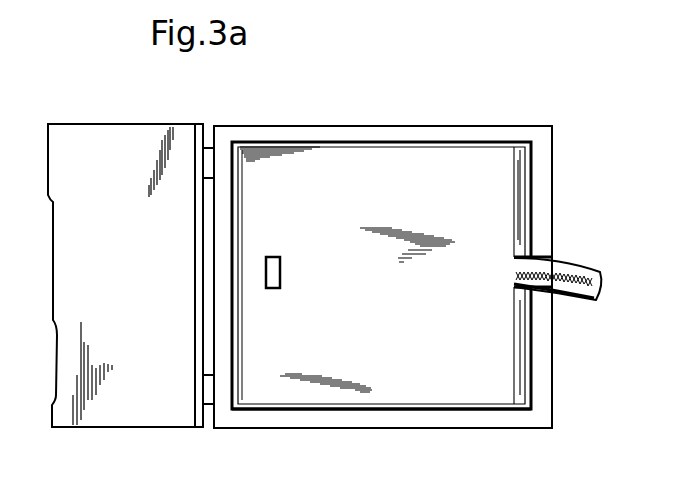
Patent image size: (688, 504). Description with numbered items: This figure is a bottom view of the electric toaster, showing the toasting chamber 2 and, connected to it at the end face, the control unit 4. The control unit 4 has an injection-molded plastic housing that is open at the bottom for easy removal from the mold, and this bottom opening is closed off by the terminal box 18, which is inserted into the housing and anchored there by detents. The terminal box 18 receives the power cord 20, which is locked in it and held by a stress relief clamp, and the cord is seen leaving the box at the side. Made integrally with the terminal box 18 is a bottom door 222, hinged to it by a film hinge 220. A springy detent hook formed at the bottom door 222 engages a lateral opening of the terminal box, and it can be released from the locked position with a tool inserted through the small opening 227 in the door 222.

The toasting chamber 2 is at (80, 122).
The control unit 4 is at (484, 134).
The terminal box 18 is at (373, 136).
The power cord 20 is at (585, 292).
The film hinge 220 is at (515, 203).
The bottom door 222 is at (401, 384).
The opening 227 is at (274, 272).